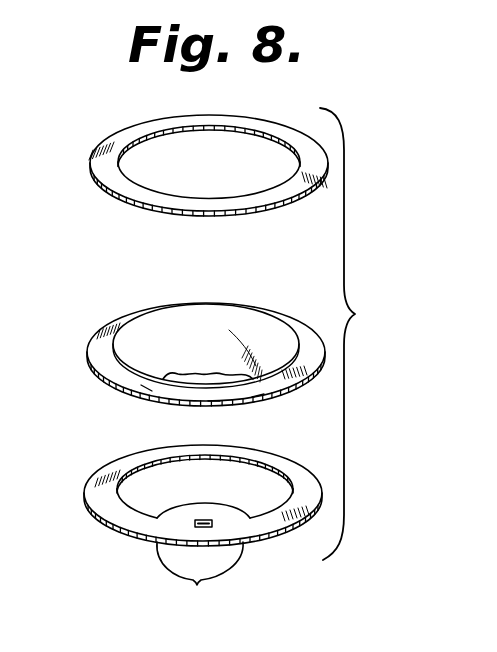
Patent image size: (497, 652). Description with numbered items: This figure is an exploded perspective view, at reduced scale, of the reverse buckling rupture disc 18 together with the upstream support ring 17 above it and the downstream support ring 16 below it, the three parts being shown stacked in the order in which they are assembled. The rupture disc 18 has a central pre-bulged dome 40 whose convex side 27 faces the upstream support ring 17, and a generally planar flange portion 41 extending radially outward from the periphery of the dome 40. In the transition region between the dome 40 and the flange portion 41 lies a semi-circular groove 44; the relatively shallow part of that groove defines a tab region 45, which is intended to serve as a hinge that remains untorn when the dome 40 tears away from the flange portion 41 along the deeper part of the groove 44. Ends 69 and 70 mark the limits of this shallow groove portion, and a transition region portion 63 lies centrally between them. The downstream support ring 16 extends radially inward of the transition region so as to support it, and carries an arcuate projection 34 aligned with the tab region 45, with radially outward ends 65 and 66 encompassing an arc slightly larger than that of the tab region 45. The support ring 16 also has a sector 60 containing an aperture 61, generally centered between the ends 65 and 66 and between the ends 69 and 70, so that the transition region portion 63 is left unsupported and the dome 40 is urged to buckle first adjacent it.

The downstream support ring 16 is at (191, 529).
The upstream support ring 17 is at (120, 134).
The reverse buckling rupture disc 18 is at (186, 351).
The disc convex side 27 is at (147, 326).
The arcuate projection 34 is at (210, 505).
The central pre-bulged dome 40 is at (222, 320).
The flange portion 41 is at (100, 342).
The semi-circular groove 44 is at (112, 374).
The tab region 45 is at (192, 372).
The sector 60 is at (200, 577).
The aperture 61 is at (207, 528).
The transition region portion 63 is at (214, 384).
The radially outward end of arcuate projection 65 is at (157, 519).
The radially outward end of arcuate projection 66 is at (252, 520).
The end of shallow groove portion 69 is at (150, 378).
The end of shallow groove portion 70 is at (255, 384).